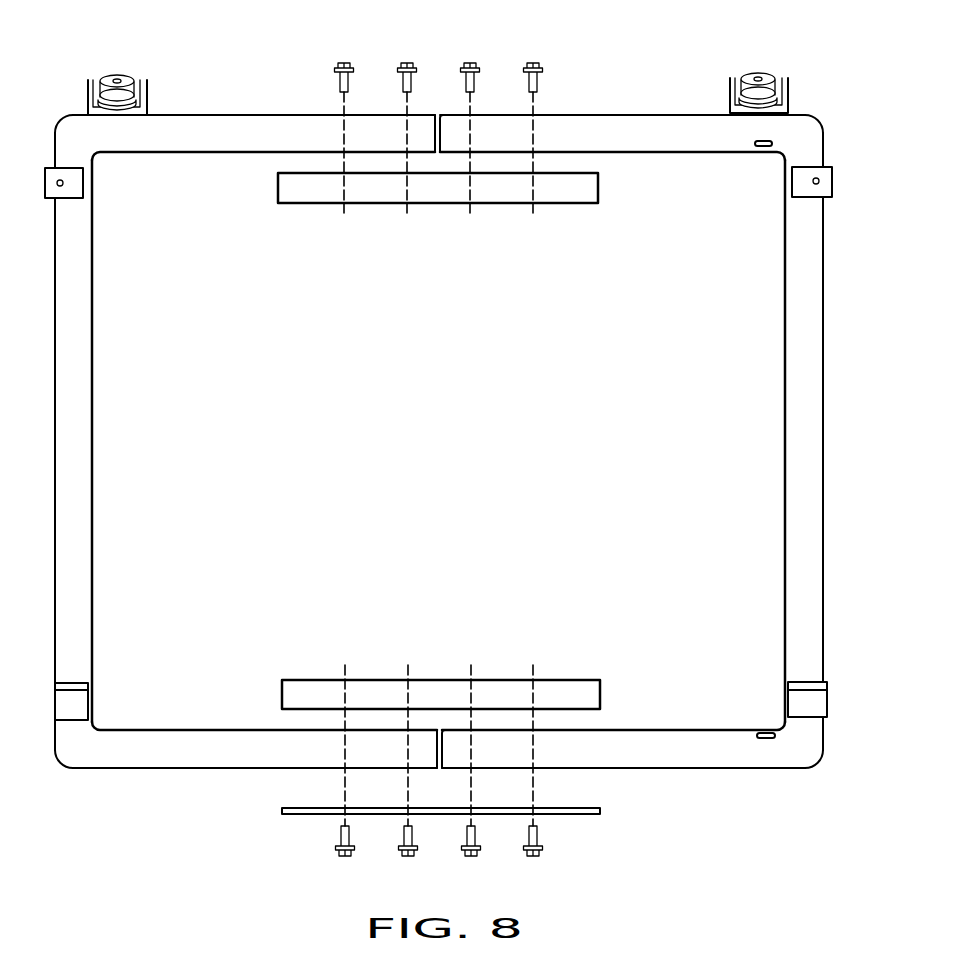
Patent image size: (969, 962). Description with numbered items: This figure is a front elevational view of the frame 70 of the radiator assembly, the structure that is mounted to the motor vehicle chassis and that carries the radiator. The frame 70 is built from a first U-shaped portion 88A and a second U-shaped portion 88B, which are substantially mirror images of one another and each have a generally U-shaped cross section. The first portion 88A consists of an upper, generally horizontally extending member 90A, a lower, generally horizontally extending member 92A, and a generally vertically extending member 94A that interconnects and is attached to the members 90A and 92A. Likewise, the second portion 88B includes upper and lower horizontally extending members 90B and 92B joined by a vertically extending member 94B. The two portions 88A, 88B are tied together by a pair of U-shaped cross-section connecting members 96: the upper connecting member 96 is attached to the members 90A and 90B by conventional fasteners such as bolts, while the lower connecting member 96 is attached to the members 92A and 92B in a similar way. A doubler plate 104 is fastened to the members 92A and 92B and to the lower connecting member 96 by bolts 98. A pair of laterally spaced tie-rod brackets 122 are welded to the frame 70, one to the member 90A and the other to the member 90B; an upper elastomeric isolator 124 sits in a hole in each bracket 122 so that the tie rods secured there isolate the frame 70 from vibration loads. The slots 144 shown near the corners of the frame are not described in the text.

The frame 70 is at (135, 818).
The first U-shaped portion 88A is at (225, 117).
The second U-shaped portion 88B is at (645, 113).
The upper horizontally extending member 90A is at (232, 143).
The upper horizontally extending member 90B is at (560, 125).
The lower horizontally extending member 92A is at (123, 740).
The lower horizontally extending member 92B is at (622, 730).
The vertically extending member 94A is at (83, 458).
The vertically extending member 94B is at (793, 375).
The connecting member 96 is at (305, 203).
The bolt 98 is at (402, 65).
The doubler plate 104 is at (575, 815).
The tie-rod bracket 122 is at (150, 92).
The upper elastomeric isolator 124 is at (137, 78).
The slot 144 is at (762, 147).